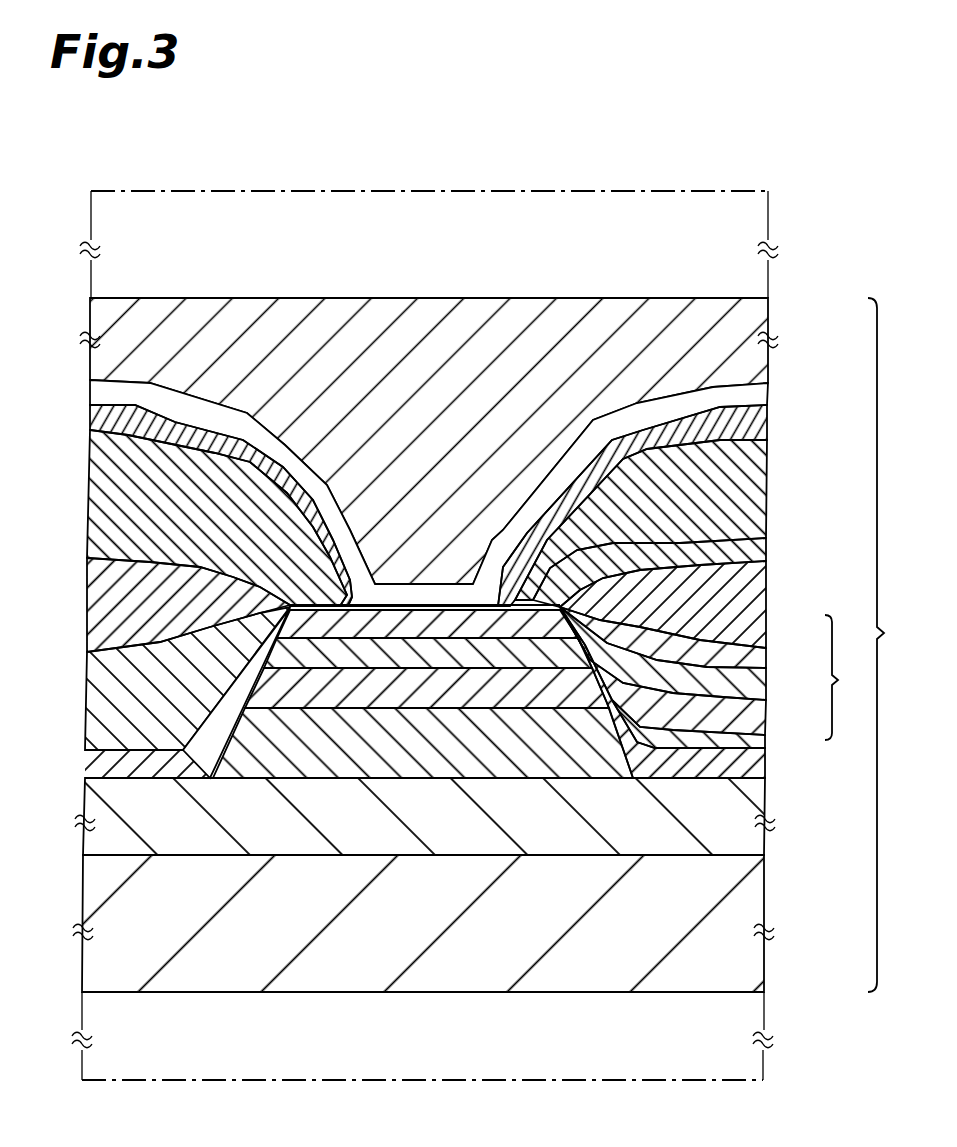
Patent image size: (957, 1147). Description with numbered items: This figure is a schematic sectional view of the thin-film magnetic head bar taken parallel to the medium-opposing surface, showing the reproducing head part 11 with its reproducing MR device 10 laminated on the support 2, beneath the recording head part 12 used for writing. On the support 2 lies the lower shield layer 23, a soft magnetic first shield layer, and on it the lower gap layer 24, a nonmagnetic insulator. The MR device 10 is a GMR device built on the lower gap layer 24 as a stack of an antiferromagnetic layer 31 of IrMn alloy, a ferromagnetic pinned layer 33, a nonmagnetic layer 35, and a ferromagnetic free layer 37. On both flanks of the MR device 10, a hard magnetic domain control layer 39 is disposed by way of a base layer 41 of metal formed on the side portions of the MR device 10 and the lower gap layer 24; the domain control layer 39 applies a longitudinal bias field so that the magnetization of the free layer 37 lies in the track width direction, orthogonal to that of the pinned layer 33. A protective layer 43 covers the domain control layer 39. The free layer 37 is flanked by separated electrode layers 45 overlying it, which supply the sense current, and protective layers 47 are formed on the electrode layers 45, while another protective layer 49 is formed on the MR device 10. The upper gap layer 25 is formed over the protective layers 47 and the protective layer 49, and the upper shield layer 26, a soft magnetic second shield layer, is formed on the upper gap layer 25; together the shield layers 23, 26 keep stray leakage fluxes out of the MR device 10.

The support 2 is at (763, 1068).
The MR device 10 is at (851, 677).
The reproducing head part 11 is at (895, 645).
The recording head part 12 is at (768, 203).
The lower shield layer 23 is at (764, 872).
The lower gap layer 24 is at (765, 822).
The upper gap layer 25 is at (767, 383).
The upper shield layer 26 is at (768, 305).
The antiferromagnetic layer 31 is at (765, 741).
The pinned layer 33 is at (766, 717).
The nonmagnetic layer 35 is at (766, 683).
The free layer 37 is at (766, 655).
The domain control layer 39 is at (765, 762).
The base layer 41 is at (765, 780).
The protective layer 43 is at (766, 592).
The electrode layers 45 is at (767, 468).
The protective layers 47 is at (767, 420).
The protective layer 49 is at (745, 553).